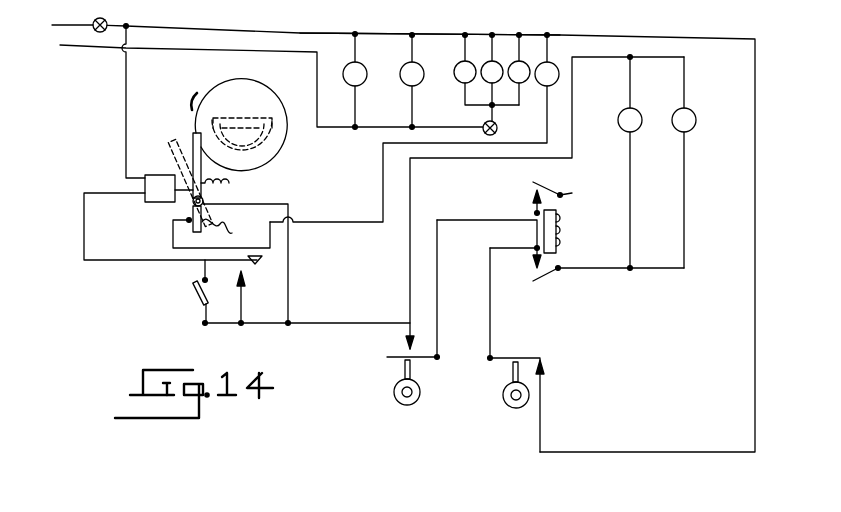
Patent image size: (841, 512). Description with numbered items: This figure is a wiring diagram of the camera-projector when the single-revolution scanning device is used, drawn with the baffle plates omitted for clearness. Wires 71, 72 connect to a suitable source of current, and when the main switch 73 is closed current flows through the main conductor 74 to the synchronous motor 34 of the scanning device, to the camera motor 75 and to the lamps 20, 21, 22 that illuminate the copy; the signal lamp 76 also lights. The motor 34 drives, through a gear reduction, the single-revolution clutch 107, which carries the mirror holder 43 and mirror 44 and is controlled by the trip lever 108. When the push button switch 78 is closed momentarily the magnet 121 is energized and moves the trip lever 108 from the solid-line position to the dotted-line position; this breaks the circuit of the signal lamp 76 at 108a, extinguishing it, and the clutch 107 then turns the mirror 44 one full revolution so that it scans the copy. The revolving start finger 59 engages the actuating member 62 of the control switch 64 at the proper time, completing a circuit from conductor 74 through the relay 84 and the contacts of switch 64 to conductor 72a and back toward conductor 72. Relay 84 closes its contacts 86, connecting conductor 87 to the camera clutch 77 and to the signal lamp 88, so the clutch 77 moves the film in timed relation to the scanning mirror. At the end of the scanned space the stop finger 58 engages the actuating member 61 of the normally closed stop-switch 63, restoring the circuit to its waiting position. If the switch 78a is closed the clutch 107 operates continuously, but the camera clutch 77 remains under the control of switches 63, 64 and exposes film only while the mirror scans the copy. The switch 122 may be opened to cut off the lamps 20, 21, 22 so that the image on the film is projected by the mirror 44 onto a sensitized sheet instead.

The wire 71 is at (391, 234).
The wire 72 is at (259, 83).
The main switch 73 is at (106, 21).
The main conductor 74 is at (447, 33).
The mirror 44 is at (238, 118).
The mirror holder 43 is at (268, 147).
The single-revolution clutch 107 is at (258, 156).
The trip lever 108 is at (196, 152).
The contact point 108a is at (234, 233).
The magnet 121 is at (165, 204).
The push button switch 78 is at (266, 259).
The switch 78a is at (196, 284).
The synchronous motor 34 is at (355, 79).
The camera motor 75 is at (412, 80).
The lamp 20 is at (486, 69).
The lamp 21 is at (492, 77).
The lamp 22 is at (519, 69).
The signal lamp 76 is at (414, 127).
The switch 122 is at (497, 128).
The conductor 72a is at (545, 203).
The camera clutch 77 is at (630, 163).
The signal lamp 88 is at (684, 162).
The relay 84 is at (510, 225).
The contacts 86 is at (546, 283).
The conductor 87 is at (621, 281).
The control switch 64 is at (407, 289).
The actuating member 62 is at (404, 368).
The start finger 59 is at (399, 403).
The stop-switch 63 is at (527, 350).
The actuating member 61 is at (513, 375).
The stop finger 58 is at (507, 404).